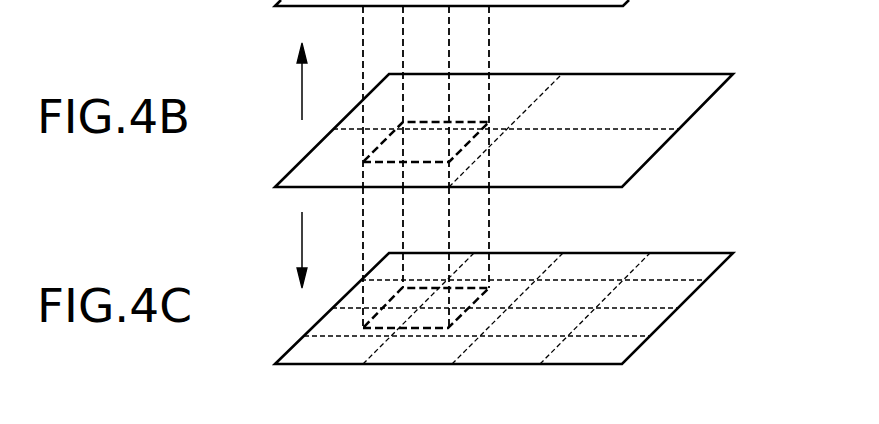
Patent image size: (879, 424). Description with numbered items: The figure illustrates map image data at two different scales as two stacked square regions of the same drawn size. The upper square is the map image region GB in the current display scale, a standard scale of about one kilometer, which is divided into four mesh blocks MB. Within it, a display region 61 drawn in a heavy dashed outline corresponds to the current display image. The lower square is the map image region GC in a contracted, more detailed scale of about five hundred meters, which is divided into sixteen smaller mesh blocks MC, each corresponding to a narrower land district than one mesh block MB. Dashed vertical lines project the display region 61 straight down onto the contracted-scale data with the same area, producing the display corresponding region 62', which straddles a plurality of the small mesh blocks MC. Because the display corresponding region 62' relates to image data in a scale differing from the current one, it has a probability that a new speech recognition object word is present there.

In FIG. 4B, the display region 61 is at (362, 161).
In FIG. 4B, the mesh block MB is at (663, 95).
In FIG. 4B, the map image region GB is at (516, 93).
In FIG. 4C, the display corresponding region 62' is at (426, 353).
In FIG. 4C, the mesh block MC is at (677, 291).
In FIG. 4C, the map image region GC is at (534, 289).